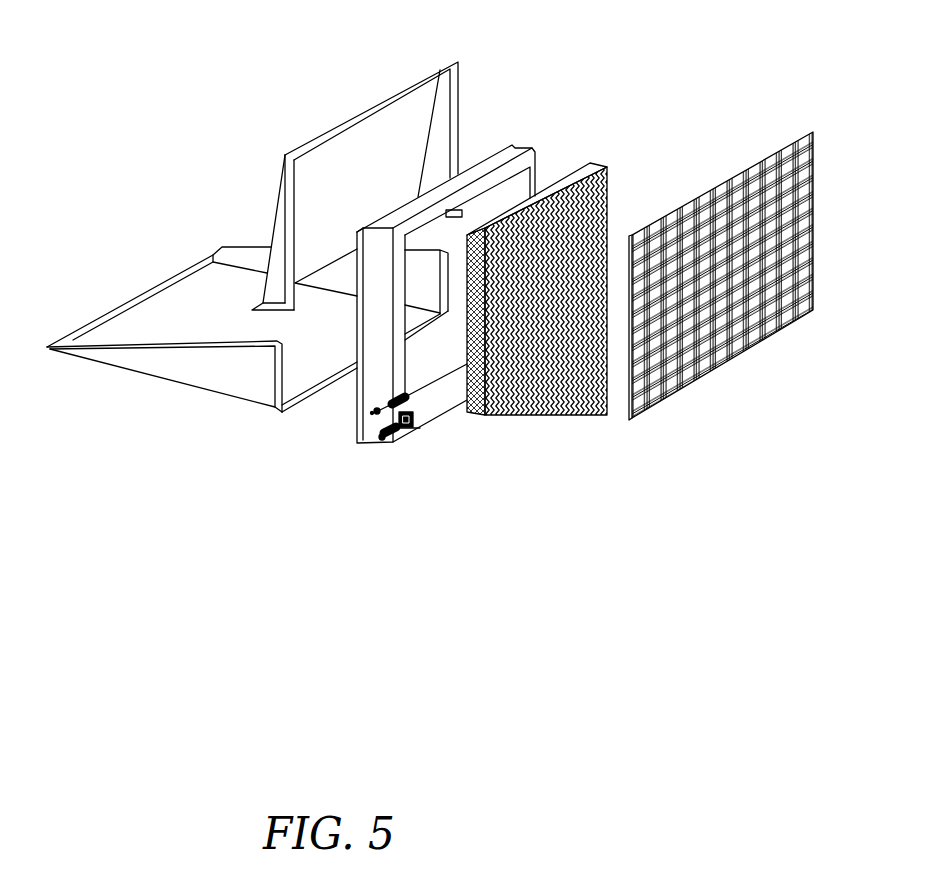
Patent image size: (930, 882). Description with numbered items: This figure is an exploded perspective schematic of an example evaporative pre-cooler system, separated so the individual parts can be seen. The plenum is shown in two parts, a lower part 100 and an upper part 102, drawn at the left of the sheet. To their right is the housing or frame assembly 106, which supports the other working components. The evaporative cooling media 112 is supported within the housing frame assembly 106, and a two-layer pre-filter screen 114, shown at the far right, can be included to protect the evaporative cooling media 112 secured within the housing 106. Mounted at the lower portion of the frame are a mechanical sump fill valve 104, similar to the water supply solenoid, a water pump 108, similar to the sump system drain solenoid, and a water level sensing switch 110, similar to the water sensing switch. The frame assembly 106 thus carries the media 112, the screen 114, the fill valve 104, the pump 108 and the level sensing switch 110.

The lower part of plenum 100 is at (227, 363).
The upper part of plenum 102 is at (342, 113).
The mechanical sump fill valve 104 is at (350, 413).
The housing frame assembly 106 is at (527, 143).
The H2O pump 108 is at (373, 446).
The H2O level sensing switch 110 is at (413, 446).
The evaporative cooling media 112 is at (535, 352).
The two-layer pre-filter screen 114 is at (708, 338).